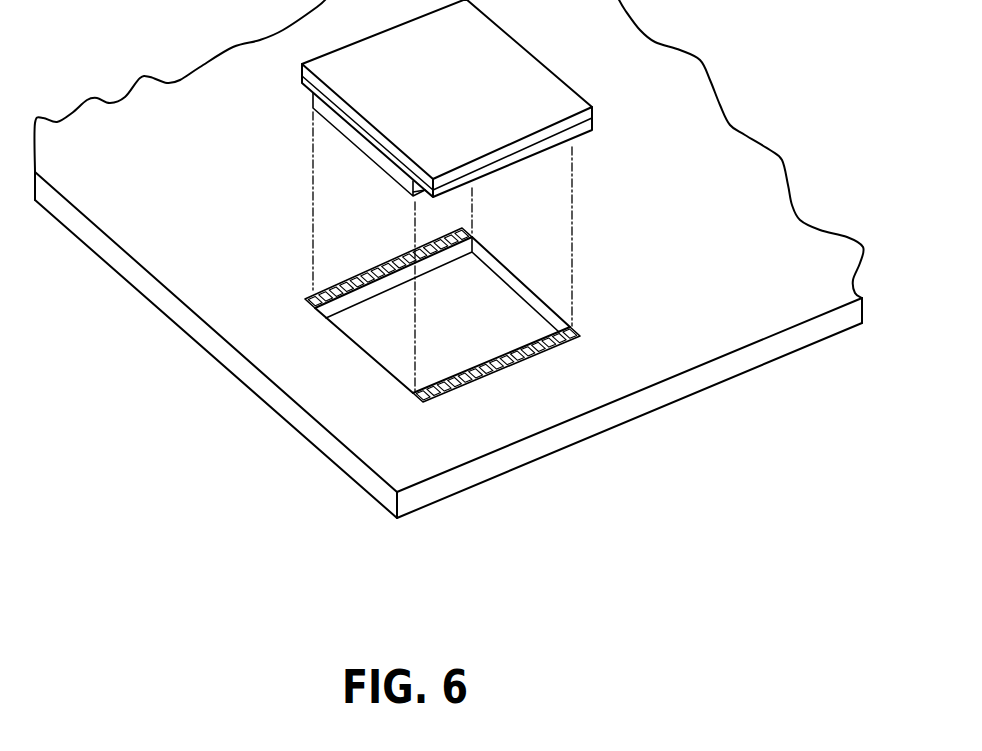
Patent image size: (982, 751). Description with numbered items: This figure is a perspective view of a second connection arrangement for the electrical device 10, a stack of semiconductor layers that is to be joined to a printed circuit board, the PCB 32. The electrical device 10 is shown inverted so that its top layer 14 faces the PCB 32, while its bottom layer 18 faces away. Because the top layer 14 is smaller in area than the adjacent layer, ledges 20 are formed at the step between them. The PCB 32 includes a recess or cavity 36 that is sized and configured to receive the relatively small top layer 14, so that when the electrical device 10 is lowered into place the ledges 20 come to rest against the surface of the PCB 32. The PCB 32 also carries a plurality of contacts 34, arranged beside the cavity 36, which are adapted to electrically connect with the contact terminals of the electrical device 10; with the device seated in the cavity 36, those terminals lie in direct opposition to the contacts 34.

The electrical device 10 is at (470, 98).
The top layer 14 is at (317, 107).
The bottom layer 18 is at (585, 118).
The ledges 20 is at (423, 197).
The printed circuit board 32 is at (567, 405).
The contacts 34 is at (331, 284).
The cavity 36 is at (500, 302).